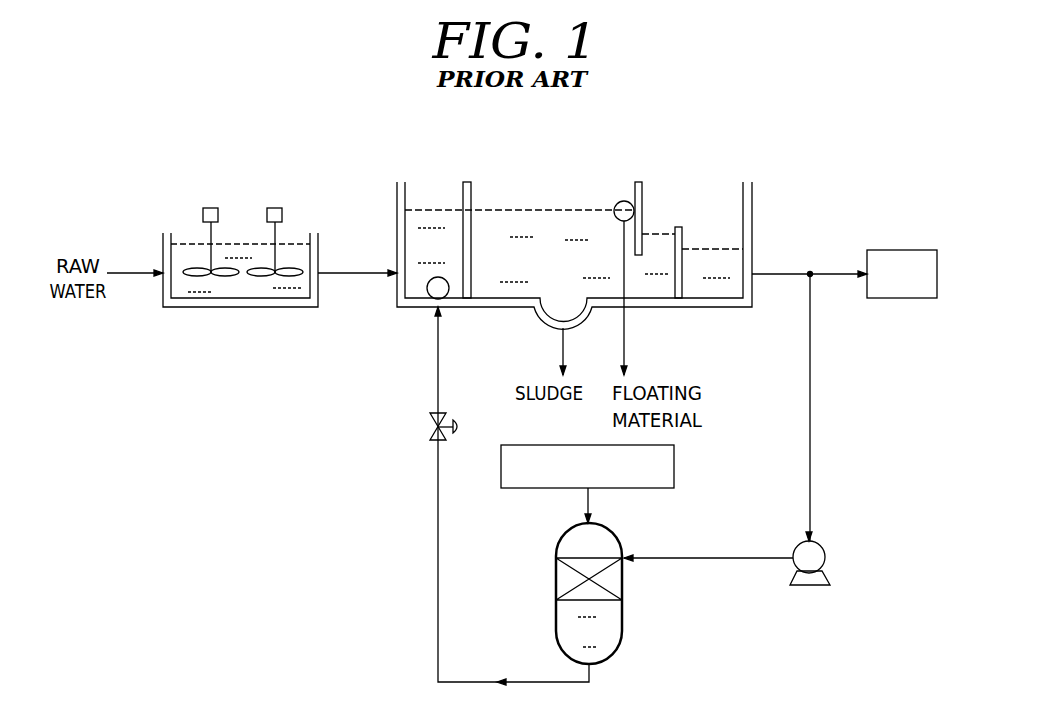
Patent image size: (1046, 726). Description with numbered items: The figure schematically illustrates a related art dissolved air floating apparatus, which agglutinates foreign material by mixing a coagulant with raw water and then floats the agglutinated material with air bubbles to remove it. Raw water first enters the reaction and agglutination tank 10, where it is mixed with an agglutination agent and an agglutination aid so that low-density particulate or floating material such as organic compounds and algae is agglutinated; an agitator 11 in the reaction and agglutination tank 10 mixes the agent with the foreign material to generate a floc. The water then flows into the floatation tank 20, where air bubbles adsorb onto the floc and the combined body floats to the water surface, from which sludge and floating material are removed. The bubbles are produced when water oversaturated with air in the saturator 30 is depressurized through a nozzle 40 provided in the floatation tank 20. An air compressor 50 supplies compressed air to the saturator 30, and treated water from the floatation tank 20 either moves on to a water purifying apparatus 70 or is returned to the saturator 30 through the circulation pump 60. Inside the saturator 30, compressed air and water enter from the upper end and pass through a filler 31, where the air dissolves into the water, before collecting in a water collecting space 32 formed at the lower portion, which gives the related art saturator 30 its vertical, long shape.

The reaction and agglutination tank 10 is at (217, 312).
The agitator 11 is at (233, 276).
The floatation tank 20 is at (696, 185).
The saturator 30 is at (552, 547).
The filler 31 is at (562, 582).
The water collecting space 32 is at (562, 635).
The nozzle 40 is at (430, 296).
The air compressor 50 is at (674, 465).
The circulation pump 60 is at (823, 550).
The water purifying apparatus 70 is at (902, 250).